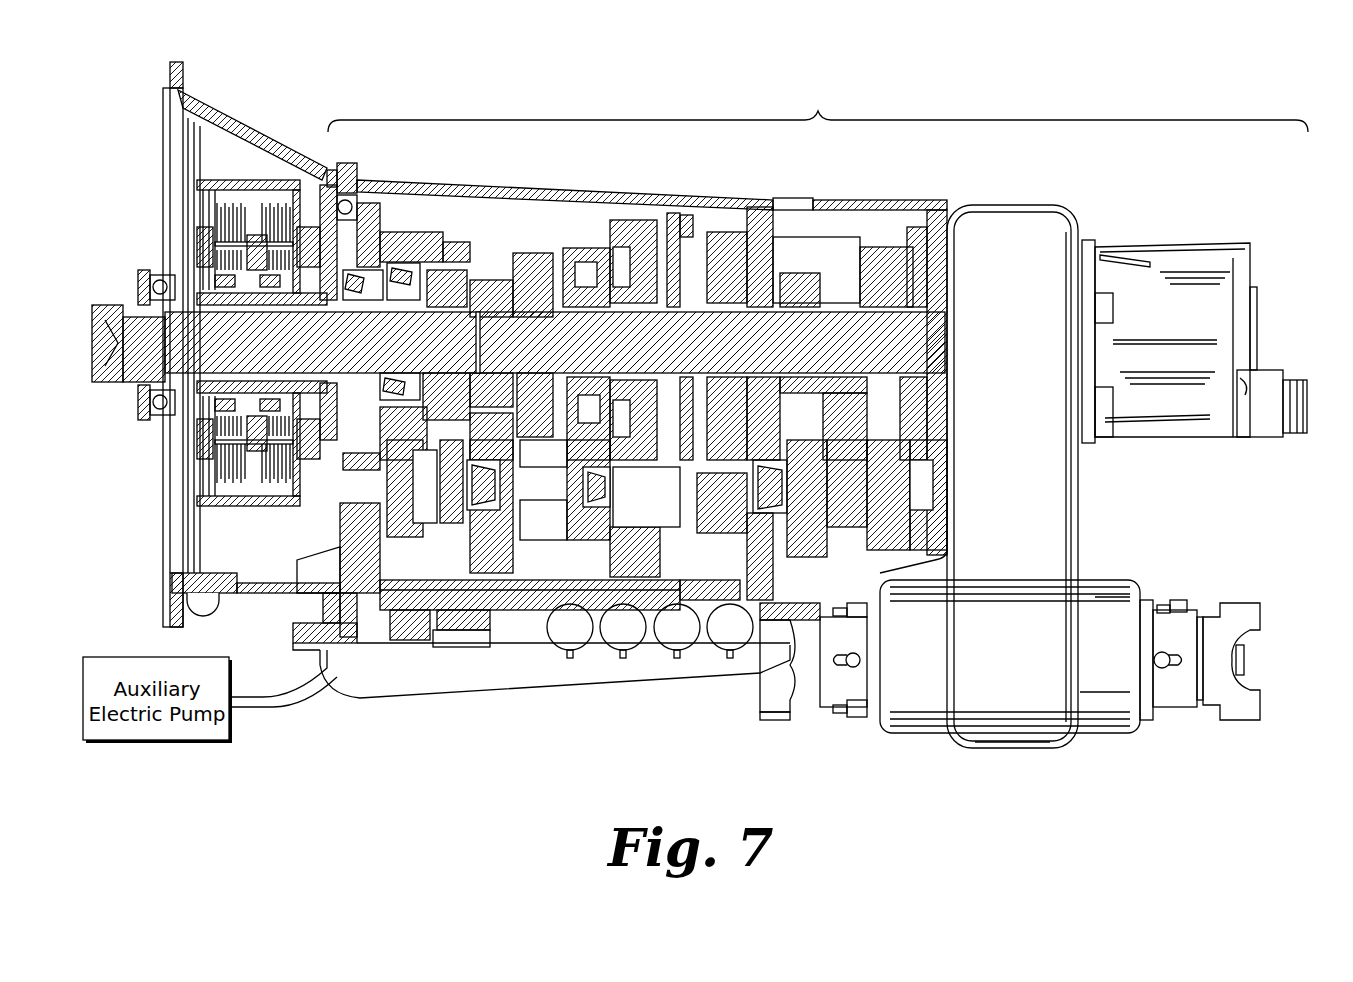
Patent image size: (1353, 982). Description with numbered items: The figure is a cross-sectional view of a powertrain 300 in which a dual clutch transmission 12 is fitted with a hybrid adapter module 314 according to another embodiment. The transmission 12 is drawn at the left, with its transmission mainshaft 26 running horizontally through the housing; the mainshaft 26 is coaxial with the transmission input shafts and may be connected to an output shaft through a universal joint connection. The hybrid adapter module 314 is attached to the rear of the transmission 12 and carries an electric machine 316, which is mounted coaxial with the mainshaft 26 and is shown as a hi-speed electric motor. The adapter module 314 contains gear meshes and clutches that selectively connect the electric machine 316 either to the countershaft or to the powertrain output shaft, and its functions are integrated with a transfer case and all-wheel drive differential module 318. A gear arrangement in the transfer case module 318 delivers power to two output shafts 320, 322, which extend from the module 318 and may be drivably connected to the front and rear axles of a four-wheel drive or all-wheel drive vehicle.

The powertrain 300 is at (818, 110).
The dual clutch transmission 12 is at (602, 176).
The transmission mainshaft 26 is at (724, 356).
The hybrid adapter module 314 is at (1092, 212).
The electric machine 316 is at (1258, 262).
The transfer case and all-wheel drive differential module 318 is at (1130, 755).
The output shaft 320 is at (1192, 607).
The output shaft 322 is at (824, 716).